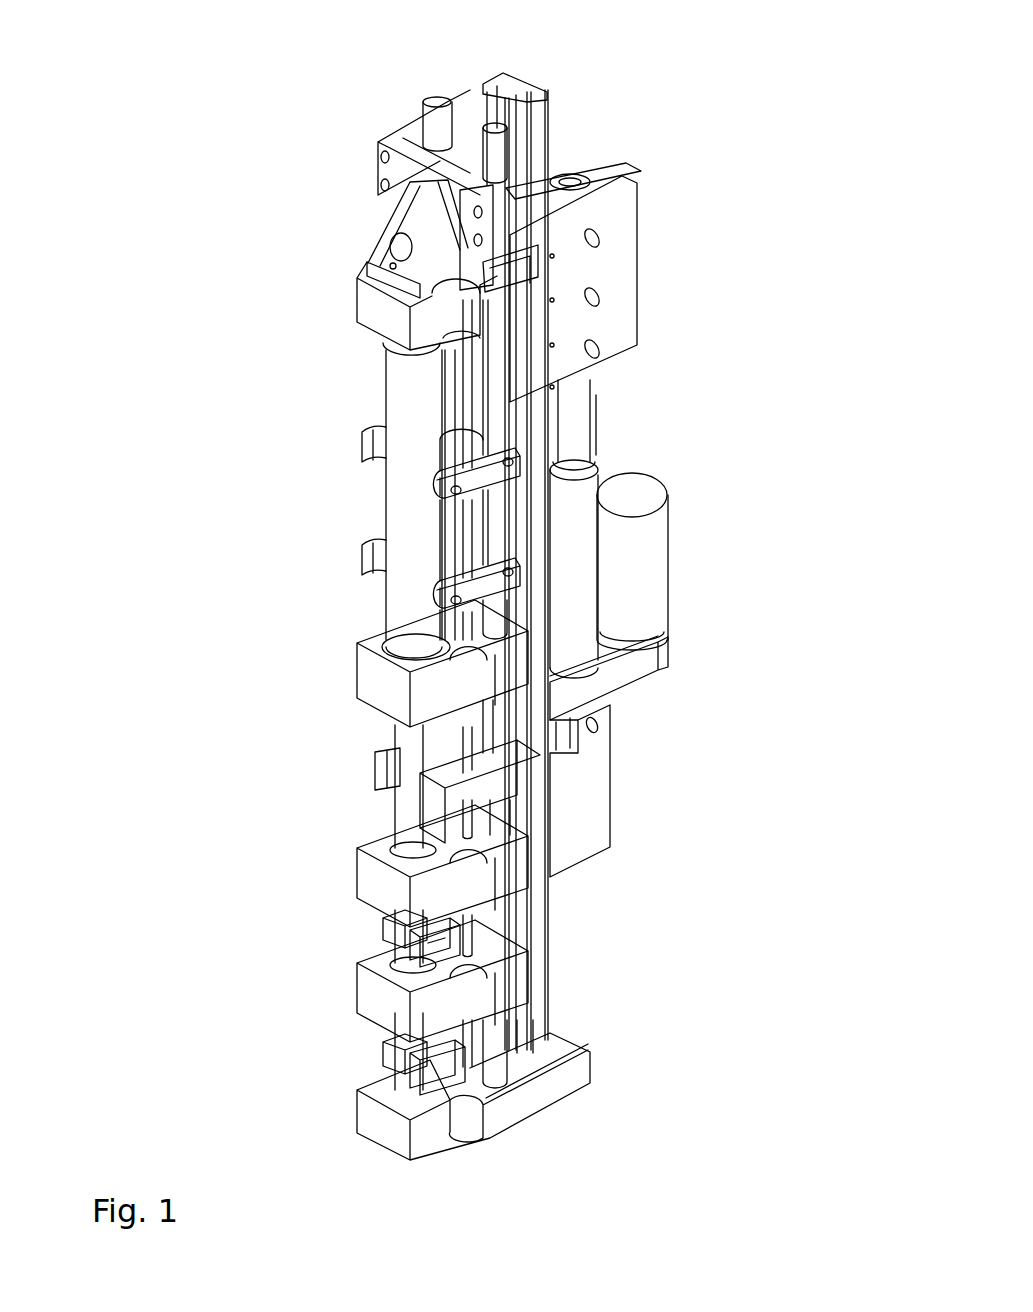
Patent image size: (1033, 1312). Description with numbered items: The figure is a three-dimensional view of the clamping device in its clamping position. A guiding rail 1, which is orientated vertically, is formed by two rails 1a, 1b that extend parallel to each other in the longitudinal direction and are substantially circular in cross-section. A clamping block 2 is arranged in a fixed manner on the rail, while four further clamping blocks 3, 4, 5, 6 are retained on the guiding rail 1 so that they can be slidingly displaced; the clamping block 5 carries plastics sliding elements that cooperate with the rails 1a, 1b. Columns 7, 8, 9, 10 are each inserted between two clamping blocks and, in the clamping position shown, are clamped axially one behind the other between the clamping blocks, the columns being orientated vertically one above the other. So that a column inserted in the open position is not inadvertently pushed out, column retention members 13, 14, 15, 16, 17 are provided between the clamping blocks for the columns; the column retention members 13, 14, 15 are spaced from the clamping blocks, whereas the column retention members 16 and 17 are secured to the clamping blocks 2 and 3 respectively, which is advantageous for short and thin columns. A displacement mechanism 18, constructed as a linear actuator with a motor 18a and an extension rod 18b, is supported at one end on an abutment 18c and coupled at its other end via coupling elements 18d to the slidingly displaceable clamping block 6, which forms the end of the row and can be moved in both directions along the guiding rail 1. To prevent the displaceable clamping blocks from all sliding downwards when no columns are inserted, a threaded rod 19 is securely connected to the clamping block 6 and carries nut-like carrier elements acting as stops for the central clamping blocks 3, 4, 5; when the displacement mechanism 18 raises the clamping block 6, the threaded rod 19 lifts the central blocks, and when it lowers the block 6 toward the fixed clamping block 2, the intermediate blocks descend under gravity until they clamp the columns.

The guiding rail 1 is at (465, 113).
The rail 1a is at (432, 118).
The rail 1b is at (488, 157).
The clamping block 2 is at (377, 1118).
The clamping block 3 is at (377, 987).
The clamping block 4 is at (377, 872).
The clamping block 5 is at (377, 670).
The clamping block 6 is at (370, 297).
The column 7 is at (413, 1055).
The column 8 is at (417, 933).
The column 9 is at (403, 740).
The column 10 is at (403, 487).
The column retention member 13 is at (377, 435).
The column retention member 14 is at (365, 562).
The column retention member 15 is at (387, 775).
The column retention member 16 is at (427, 942).
The column retention member 17 is at (432, 1073).
The displacement mechanism 18 is at (643, 411).
The motor 18a is at (640, 564).
The extension rod 18b is at (582, 438).
The abutment 18c is at (598, 820).
The coupling elements 18d is at (625, 225).
The threaded rod 19 is at (457, 513).